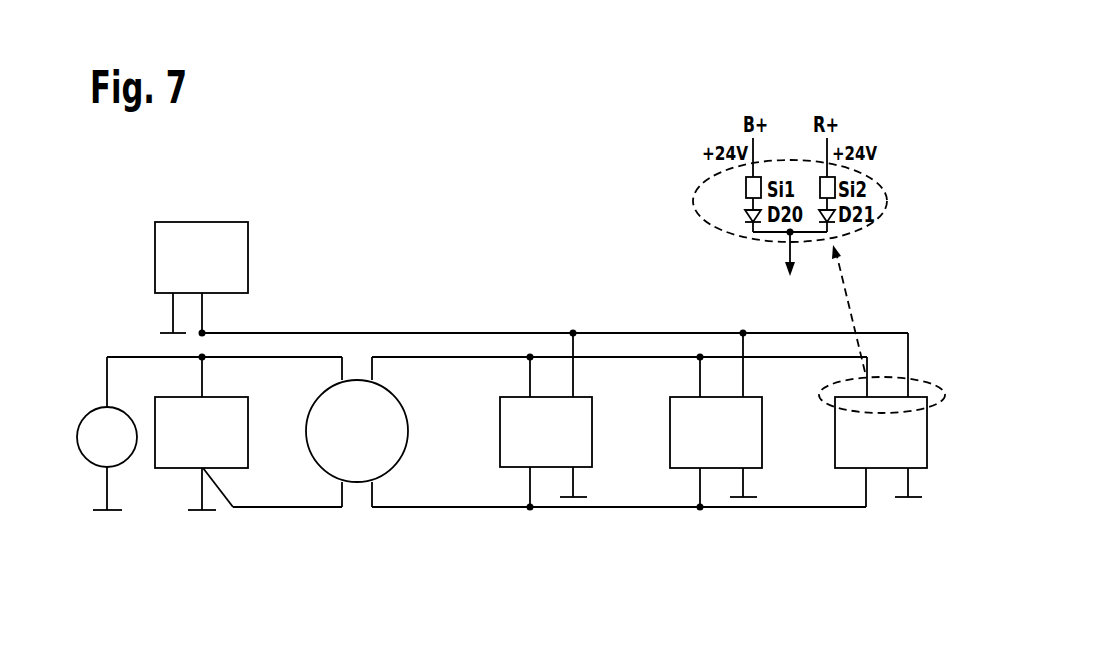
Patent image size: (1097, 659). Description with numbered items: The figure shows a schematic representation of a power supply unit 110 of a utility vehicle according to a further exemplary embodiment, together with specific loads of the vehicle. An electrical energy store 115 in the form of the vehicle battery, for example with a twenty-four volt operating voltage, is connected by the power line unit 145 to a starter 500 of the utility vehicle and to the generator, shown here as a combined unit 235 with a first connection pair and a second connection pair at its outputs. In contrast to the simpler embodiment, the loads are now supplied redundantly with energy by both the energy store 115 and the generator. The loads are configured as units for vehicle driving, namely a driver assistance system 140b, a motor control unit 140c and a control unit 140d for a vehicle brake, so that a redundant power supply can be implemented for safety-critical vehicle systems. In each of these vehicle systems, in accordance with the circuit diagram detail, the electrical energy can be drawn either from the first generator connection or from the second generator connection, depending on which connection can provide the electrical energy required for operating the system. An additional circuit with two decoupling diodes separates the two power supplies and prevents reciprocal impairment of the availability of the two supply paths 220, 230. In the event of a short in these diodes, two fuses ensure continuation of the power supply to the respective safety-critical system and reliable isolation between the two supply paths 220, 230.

The power supply unit 110 is at (324, 227).
The power line unit 145 is at (200, 222).
The supply path 220 is at (358, 333).
The supply path 230 is at (440, 357).
The starter 500 is at (78, 456).
The electrical energy store 115 is at (152, 466).
The combined unit 235 is at (360, 498).
The driver assistance system 140b is at (548, 397).
The control unit for a vehicle brake 140d is at (718, 397).
The motor control unit 140c is at (883, 397).